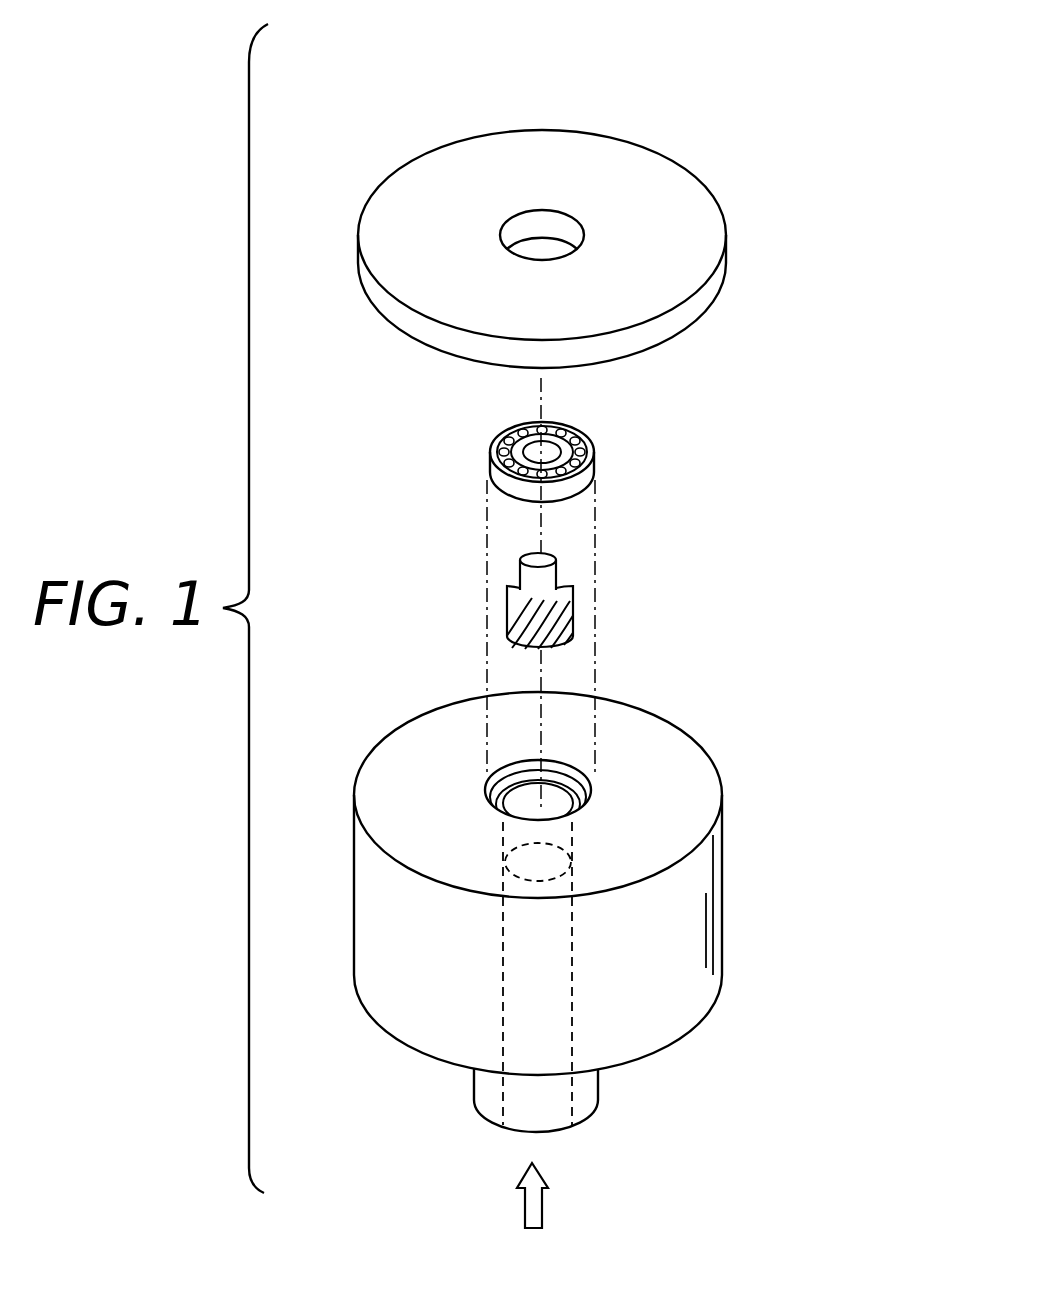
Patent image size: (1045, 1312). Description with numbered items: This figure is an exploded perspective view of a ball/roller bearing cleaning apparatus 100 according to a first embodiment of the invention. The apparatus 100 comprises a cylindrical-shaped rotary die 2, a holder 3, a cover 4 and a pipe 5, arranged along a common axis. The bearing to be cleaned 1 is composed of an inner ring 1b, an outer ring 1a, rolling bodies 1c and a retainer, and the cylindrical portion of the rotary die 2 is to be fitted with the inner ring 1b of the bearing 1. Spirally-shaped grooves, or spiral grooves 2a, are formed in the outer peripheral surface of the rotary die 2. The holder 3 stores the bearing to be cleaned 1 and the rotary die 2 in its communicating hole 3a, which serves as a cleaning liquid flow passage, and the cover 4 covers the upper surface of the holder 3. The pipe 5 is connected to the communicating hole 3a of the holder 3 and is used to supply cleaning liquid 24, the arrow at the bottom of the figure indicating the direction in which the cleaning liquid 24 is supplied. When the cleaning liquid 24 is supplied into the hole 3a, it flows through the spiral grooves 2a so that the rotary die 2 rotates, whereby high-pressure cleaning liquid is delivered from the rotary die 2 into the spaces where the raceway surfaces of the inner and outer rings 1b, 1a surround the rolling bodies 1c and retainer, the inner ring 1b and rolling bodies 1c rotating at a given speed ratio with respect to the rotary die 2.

The ball/roller bearing cleaning apparatus 100 is at (730, 104).
The cover 4 is at (726, 278).
The bearing to be cleaned 1 is at (625, 457).
The outer ring 1a is at (505, 480).
The inner ring 1b is at (520, 428).
The rolling bodies 1c is at (497, 447).
The cylindrical-shaped rotary die 2 is at (575, 613).
The spiral grooves 2a is at (520, 632).
The holder 3 is at (722, 893).
The communicating hole 3a is at (572, 860).
The pipe 5 is at (598, 1097).
The cleaning liquid 24 is at (544, 1204).